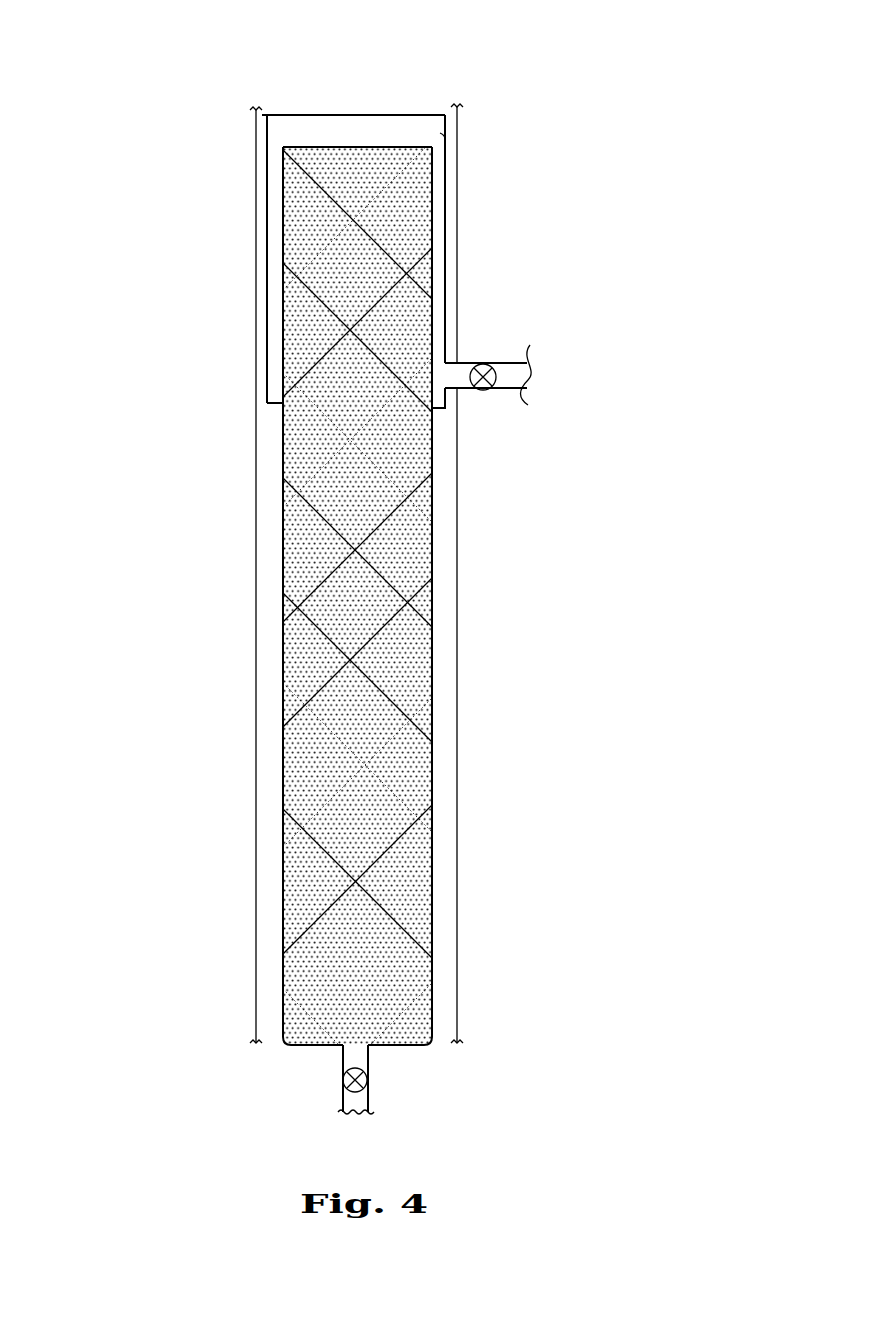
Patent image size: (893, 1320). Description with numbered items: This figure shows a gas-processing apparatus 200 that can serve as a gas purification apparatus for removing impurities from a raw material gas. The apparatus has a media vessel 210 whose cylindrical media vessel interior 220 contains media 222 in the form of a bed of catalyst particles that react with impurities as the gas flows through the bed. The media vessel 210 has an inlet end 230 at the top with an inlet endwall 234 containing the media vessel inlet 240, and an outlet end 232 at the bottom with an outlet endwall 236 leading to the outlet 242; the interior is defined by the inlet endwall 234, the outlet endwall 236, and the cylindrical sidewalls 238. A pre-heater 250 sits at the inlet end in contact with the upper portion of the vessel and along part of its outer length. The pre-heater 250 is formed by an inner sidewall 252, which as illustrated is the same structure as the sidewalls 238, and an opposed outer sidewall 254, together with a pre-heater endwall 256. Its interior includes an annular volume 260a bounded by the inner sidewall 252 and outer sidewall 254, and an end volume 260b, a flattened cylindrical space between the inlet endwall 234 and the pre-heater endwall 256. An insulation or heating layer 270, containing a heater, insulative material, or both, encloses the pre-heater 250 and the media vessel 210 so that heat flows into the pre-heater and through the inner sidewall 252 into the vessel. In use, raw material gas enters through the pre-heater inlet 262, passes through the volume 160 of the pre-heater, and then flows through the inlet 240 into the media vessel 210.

The gas-processing apparatus 200 is at (140, 462).
The media vessel 210 is at (281, 935).
The media vessel interior 220 is at (372, 740).
The media 222 is at (368, 682).
The inlet end 230 is at (278, 81).
The outlet end 232 is at (297, 1048).
The inlet endwall 234 is at (373, 149).
The outlet endwall 236 is at (423, 1051).
The sidewalls 238 is at (281, 252).
The media vessel inlet 240 is at (303, 137).
The outlet 242 is at (341, 1048).
The pre-heater 250 is at (276, 134).
The inner sidewall 252 is at (437, 311).
The outer sidewall 254 is at (452, 262).
The pre-heater endwall 256 is at (335, 110).
The annular volume 260a is at (277, 208).
The end volume 260b is at (408, 117).
The pre-heater inlet 262 is at (470, 392).
The insulation or heating layer 270 is at (456, 283).
The volume of pre-heater 160 is at (405, 133).